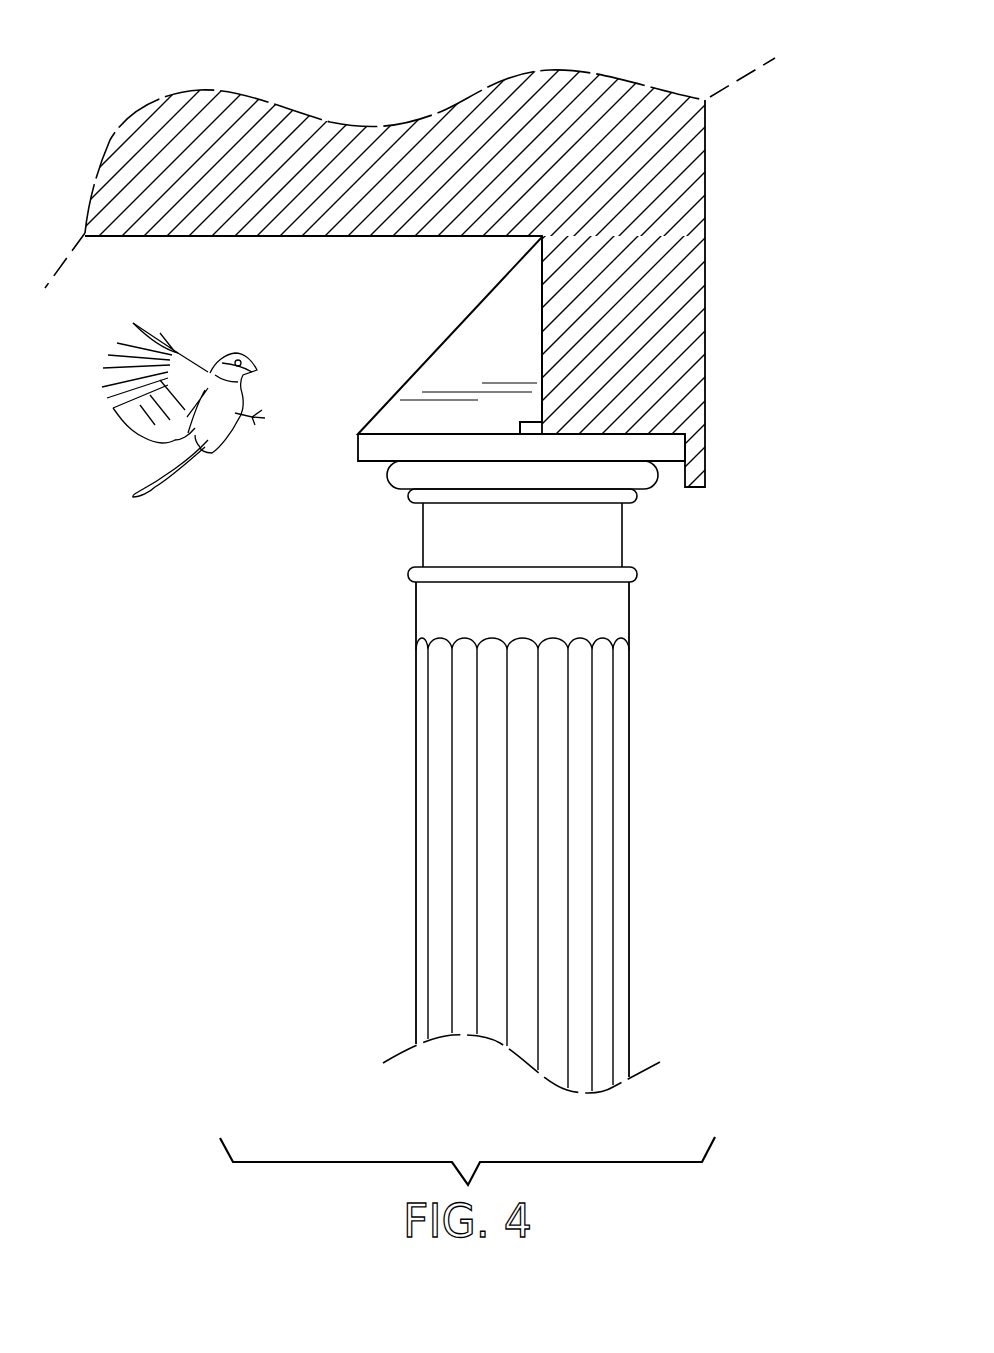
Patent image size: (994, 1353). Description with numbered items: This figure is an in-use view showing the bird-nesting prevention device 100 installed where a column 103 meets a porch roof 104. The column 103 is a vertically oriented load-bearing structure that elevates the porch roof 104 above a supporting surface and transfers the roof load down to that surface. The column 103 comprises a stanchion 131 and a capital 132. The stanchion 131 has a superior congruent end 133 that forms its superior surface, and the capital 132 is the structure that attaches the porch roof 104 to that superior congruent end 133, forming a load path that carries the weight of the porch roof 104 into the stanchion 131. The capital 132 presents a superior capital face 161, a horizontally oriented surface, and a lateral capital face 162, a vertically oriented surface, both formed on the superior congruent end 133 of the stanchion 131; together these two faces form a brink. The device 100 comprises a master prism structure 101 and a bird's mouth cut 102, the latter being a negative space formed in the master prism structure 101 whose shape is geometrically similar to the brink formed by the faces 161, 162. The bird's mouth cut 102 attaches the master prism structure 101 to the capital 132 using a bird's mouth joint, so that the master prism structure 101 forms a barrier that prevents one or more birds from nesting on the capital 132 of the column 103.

The bird-nesting prevention device 100 is at (428, 353).
The master prism structure 101 is at (393, 418).
The bird's mouth cut 102 is at (525, 413).
The column 103 is at (625, 786).
The porch roof 104 is at (485, 140).
The stanchion 131 is at (613, 694).
The capital 132 is at (658, 403).
The superior congruent end 133 is at (627, 448).
The superior capital face 161 is at (540, 433).
The lateral capital face 162 is at (358, 448).